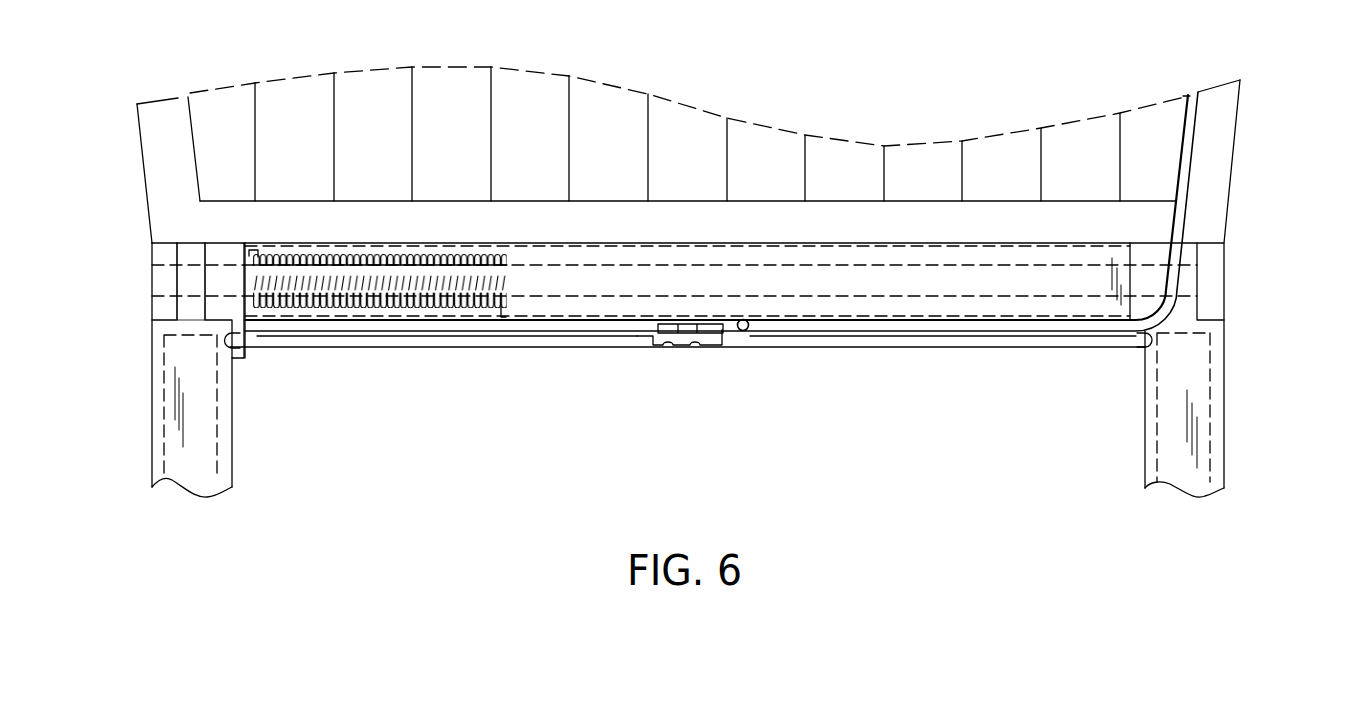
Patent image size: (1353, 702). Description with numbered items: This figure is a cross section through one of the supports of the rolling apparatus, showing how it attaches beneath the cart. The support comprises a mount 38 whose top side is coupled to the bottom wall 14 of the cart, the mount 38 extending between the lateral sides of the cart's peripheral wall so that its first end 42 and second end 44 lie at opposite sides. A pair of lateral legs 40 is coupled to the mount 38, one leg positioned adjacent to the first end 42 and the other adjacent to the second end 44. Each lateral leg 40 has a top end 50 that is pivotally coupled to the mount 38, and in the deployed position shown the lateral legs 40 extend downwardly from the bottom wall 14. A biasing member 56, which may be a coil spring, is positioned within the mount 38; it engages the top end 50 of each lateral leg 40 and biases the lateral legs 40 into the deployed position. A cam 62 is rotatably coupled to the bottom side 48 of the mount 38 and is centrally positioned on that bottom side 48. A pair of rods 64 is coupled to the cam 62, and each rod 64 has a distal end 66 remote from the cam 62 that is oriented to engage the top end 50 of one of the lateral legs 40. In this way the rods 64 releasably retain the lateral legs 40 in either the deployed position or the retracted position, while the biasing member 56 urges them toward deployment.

The bottom wall 14 is at (1137, 201).
The mount 38 is at (430, 318).
The lateral legs 40 is at (152, 398).
The first end 42 is at (152, 263).
The second end 44 is at (1224, 296).
The bottom side 48 is at (615, 322).
The top end 50 is at (190, 242).
The biasing member 56 is at (355, 295).
The cam 62 is at (687, 337).
The rods 64 is at (543, 347).
The distal ends 66 is at (220, 341).